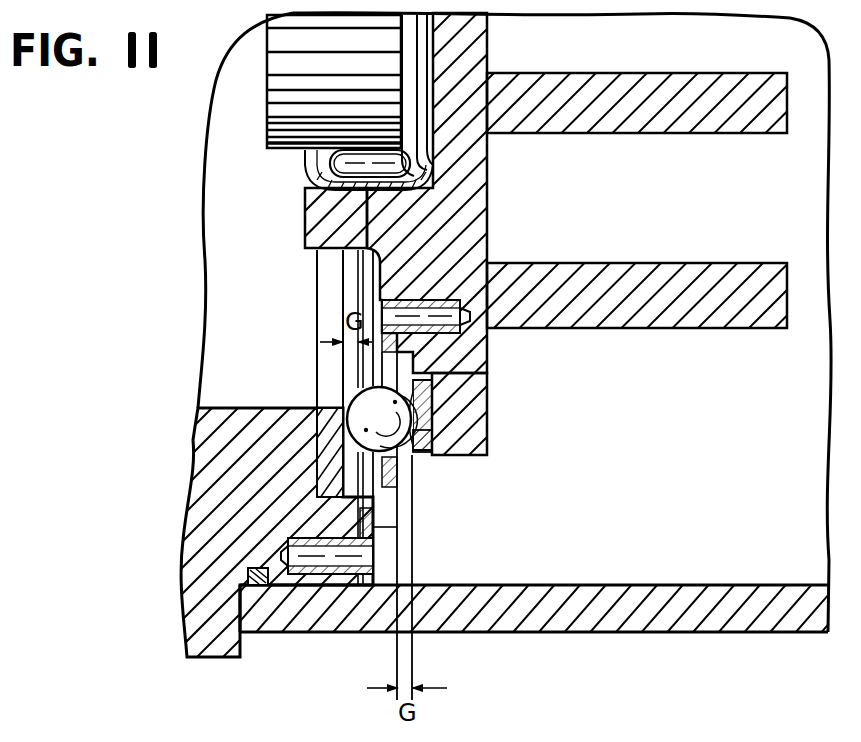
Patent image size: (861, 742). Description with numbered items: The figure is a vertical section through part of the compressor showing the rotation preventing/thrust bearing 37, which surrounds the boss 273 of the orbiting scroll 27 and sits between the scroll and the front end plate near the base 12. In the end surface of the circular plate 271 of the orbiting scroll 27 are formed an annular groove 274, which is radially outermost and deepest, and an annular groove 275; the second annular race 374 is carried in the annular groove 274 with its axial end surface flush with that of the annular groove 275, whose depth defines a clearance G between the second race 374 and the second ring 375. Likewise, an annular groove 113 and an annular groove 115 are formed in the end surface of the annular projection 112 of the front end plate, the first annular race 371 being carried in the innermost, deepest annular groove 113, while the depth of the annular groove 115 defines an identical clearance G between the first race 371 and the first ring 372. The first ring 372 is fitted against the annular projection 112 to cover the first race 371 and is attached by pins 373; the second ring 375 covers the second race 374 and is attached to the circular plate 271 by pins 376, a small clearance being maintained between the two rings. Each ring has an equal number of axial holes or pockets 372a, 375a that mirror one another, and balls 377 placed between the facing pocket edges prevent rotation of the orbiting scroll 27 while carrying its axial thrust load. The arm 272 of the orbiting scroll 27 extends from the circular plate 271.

The base plate 12 is at (545, 613).
The orbiting scroll 27 is at (498, 200).
The rotation preventing/thrust bearing 37 is at (433, 535).
The annular projection 112 is at (227, 568).
The annular groove 113 is at (327, 482).
The annular groove 115 is at (353, 522).
The circular plate 271 is at (455, 250).
The horizontal arm 272 is at (682, 310).
The boss 273 is at (305, 220).
The annular groove 274 is at (480, 424).
The annular groove 275 is at (470, 387).
The first annular race 371 is at (198, 423).
The first ring 372 is at (397, 527).
The holes or pockets 372a is at (357, 487).
The pins 373 is at (340, 572).
The second annular race 374 is at (422, 452).
The second ring 375 is at (398, 482).
The holes or pockets 375a is at (387, 365).
The pins 376 is at (470, 358).
The balls 377 is at (367, 408).